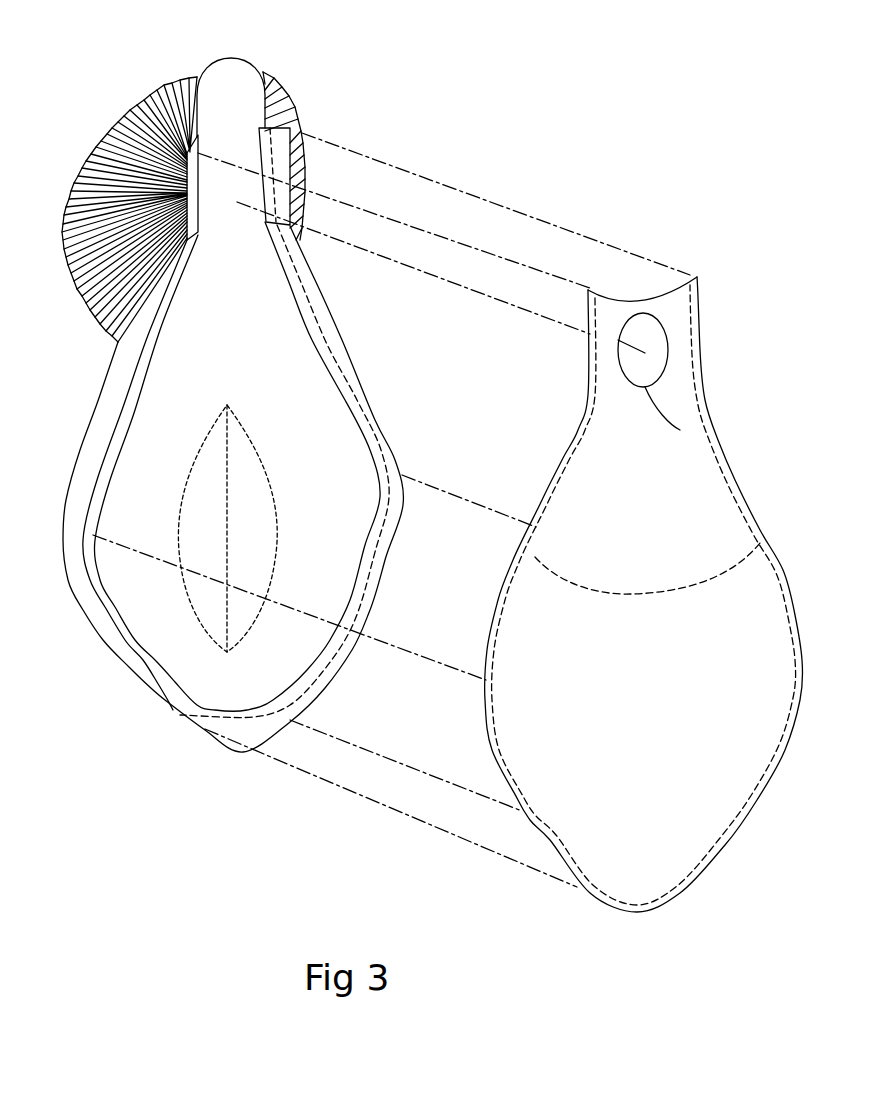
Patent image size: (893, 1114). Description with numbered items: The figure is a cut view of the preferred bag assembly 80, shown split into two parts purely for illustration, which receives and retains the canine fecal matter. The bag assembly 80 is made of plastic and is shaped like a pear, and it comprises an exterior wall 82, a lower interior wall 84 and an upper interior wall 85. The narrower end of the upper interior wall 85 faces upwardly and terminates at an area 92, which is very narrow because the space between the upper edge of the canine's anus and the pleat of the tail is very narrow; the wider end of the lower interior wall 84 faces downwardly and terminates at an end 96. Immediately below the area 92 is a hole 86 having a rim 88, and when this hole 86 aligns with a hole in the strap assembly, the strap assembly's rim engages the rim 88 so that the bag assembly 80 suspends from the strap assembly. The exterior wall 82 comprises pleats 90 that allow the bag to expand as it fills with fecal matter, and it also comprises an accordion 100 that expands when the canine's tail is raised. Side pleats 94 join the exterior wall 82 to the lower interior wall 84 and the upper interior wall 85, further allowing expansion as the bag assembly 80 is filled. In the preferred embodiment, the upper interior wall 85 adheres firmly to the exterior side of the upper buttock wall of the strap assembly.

The bag assembly 80 is at (548, 126).
The exterior wall 82 is at (160, 397).
The lower interior wall 84 is at (665, 652).
The upper interior wall 85 is at (665, 530).
The hole 86 is at (653, 337).
The rim 88 is at (680, 430).
The pleats 90 is at (270, 472).
The area 92 is at (637, 303).
The side pleats 94 is at (150, 667).
The end 96 is at (235, 737).
The accordion 100 is at (137, 112).